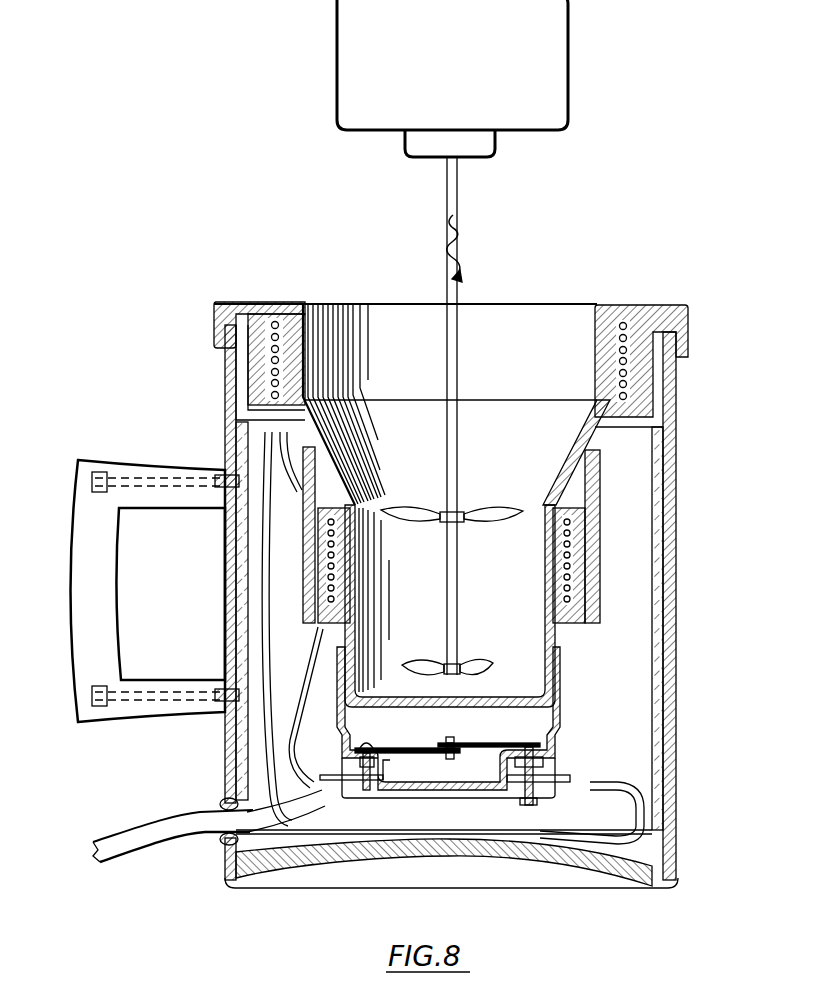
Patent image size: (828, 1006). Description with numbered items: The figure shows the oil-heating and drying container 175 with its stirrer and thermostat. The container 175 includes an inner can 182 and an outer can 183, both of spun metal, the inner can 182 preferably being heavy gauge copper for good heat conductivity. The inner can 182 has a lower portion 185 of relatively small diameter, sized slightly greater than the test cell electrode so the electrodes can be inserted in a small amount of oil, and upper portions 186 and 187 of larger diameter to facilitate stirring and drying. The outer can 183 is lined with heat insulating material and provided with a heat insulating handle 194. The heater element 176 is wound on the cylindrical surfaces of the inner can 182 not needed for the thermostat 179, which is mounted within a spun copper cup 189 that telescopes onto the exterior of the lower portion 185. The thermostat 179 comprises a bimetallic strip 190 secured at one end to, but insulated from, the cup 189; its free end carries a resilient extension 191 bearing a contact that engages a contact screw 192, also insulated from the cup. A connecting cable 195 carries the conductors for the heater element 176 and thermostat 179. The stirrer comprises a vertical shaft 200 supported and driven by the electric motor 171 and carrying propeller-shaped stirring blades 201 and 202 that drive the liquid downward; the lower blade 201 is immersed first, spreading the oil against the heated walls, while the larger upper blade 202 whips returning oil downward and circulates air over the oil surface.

The electric motor 171 is at (452, 78).
The container 175 is at (591, 284).
The heater element 176 is at (602, 527).
The thermostat 179 is at (572, 760).
The inner can 182 is at (390, 317).
The outer can 183 is at (672, 403).
The lower portion 185 is at (450, 606).
The upper portion 186 is at (556, 452).
The upper portion 187 is at (451, 369).
The spun copper cup 189 is at (563, 752).
The bimetallic strip 190 is at (402, 747).
The resilient extension 191 is at (484, 744).
The contact screw 192 is at (535, 790).
The handle 194 is at (103, 587).
The connecting cable 195 is at (173, 828).
The vertical shaft 200 is at (460, 295).
The stirring blade 201 is at (412, 662).
The stirring blade 202 is at (397, 506).